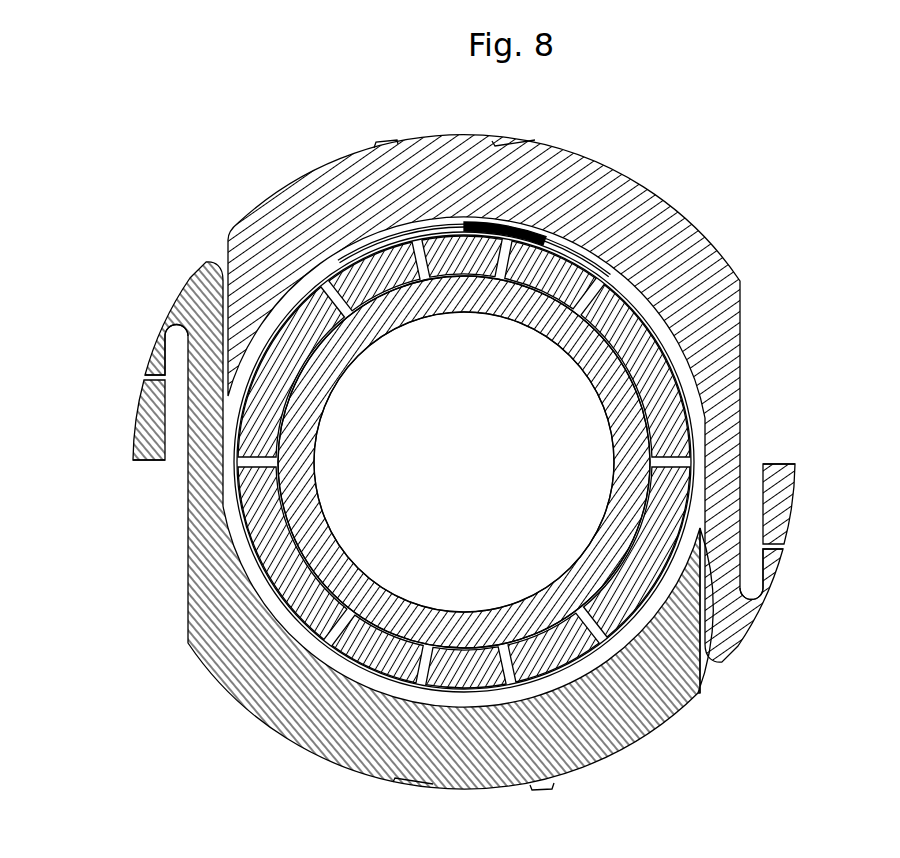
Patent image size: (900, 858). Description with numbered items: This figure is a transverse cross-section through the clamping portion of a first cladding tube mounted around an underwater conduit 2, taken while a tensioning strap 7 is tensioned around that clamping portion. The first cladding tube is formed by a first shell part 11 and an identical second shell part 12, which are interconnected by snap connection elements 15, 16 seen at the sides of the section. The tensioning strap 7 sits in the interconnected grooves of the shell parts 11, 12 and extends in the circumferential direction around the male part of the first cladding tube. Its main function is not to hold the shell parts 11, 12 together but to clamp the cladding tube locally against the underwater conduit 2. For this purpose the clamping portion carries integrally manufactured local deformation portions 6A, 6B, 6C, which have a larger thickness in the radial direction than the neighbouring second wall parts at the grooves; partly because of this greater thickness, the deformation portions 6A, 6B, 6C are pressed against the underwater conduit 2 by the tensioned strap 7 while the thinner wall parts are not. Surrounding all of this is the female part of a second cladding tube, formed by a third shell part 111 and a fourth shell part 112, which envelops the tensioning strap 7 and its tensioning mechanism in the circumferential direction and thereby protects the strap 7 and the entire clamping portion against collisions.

The underwater conduit 2 is at (428, 623).
The deformation portion 6A is at (372, 290).
The deformation portion 6B is at (465, 270).
The deformation portion 6C is at (562, 290).
The tensioning strap 7 is at (600, 265).
The first shell part 11 is at (558, 462).
The second shell part 12 is at (637, 585).
The snap connection element 15 is at (163, 327).
The snap connection element 16 is at (140, 500).
The third shell part 111 is at (238, 652).
The fourth shell part 112 is at (287, 221).